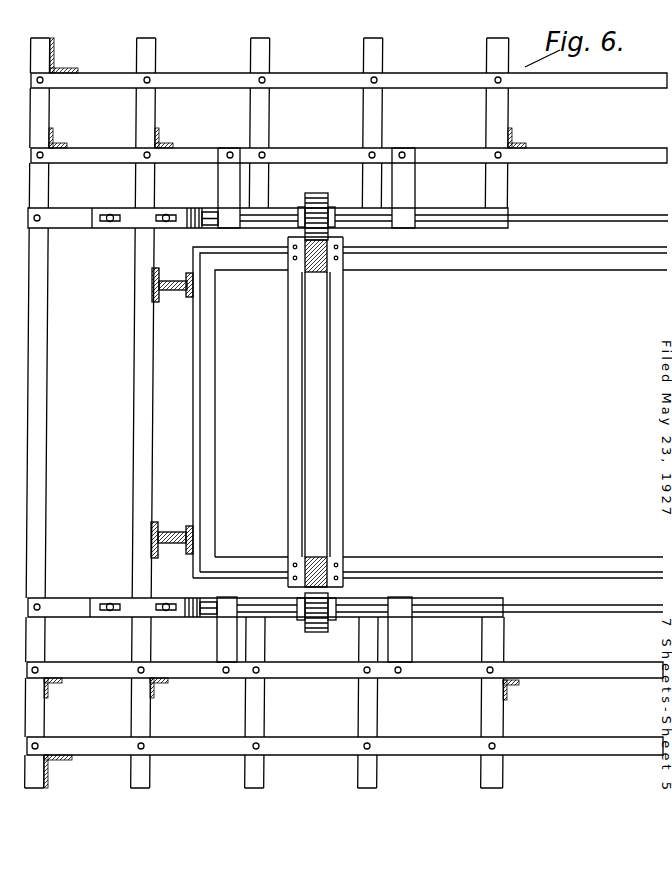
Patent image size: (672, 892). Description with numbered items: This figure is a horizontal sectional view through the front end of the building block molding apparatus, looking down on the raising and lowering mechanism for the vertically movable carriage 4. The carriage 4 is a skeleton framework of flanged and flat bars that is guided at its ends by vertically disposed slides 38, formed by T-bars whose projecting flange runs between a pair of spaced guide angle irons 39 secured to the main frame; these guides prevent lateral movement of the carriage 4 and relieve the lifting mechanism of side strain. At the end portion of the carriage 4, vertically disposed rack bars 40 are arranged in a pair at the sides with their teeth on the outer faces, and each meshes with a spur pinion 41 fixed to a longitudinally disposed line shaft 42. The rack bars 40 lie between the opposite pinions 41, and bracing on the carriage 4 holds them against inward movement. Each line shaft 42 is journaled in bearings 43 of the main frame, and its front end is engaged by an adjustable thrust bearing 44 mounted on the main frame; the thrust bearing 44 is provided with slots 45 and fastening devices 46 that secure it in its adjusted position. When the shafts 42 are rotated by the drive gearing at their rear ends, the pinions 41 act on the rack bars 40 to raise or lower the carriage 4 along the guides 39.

The vertically movable carriage 4 is at (543, 274).
The slide 38 is at (180, 295).
The guide angle iron 39 is at (159, 275).
The rack bar 40 is at (323, 268).
The pinion 41 is at (316, 199).
The line shaft 42 is at (583, 213).
The bearing 43 is at (408, 213).
The adjustable thrust bearing 44 is at (163, 213).
The slot 45 is at (109, 603).
The fastening device 46 is at (109, 613).